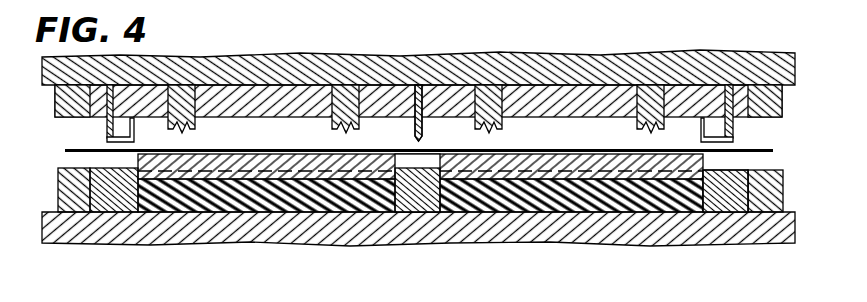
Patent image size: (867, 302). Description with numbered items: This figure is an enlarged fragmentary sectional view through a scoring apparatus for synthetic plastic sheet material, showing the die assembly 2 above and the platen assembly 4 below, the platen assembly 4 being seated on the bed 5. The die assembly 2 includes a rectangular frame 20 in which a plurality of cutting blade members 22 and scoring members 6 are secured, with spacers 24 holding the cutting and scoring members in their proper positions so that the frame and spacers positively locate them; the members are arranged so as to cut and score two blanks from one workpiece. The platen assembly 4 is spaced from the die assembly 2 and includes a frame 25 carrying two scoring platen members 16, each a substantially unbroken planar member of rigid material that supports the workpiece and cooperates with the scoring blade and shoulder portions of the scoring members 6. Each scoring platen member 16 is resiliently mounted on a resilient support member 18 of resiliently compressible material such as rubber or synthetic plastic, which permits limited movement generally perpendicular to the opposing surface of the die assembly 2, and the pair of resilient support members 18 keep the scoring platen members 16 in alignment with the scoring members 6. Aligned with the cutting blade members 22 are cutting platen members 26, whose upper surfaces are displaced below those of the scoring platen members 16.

The die assembly 2 is at (52, 108).
The platen assembly 4 is at (50, 193).
The bed 5 is at (258, 240).
The scoring member 6 is at (330, 129).
The scoring platen member 16 is at (345, 213).
The resilient support member 18 is at (520, 213).
The rectangular frame 20 is at (783, 100).
The cutting blade member 22 is at (107, 131).
The spacer 24 is at (437, 90).
The frame 25 is at (783, 191).
The cutting platen member 26 is at (113, 246).